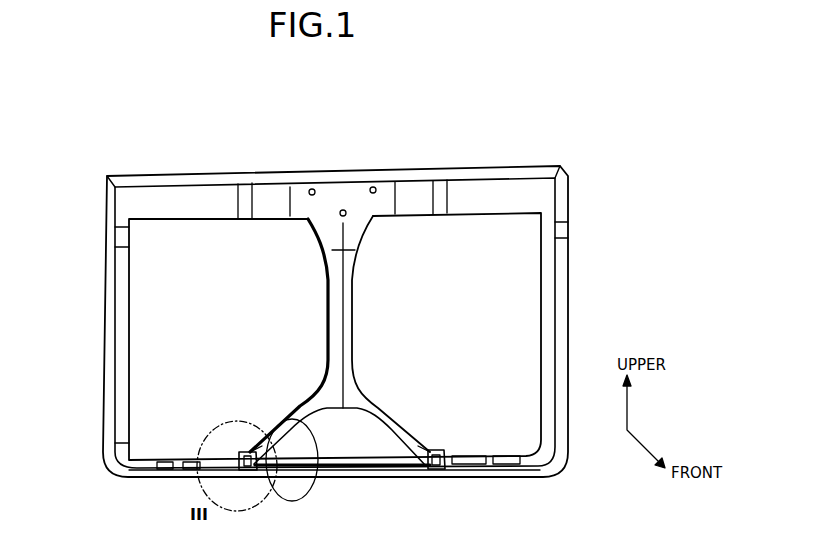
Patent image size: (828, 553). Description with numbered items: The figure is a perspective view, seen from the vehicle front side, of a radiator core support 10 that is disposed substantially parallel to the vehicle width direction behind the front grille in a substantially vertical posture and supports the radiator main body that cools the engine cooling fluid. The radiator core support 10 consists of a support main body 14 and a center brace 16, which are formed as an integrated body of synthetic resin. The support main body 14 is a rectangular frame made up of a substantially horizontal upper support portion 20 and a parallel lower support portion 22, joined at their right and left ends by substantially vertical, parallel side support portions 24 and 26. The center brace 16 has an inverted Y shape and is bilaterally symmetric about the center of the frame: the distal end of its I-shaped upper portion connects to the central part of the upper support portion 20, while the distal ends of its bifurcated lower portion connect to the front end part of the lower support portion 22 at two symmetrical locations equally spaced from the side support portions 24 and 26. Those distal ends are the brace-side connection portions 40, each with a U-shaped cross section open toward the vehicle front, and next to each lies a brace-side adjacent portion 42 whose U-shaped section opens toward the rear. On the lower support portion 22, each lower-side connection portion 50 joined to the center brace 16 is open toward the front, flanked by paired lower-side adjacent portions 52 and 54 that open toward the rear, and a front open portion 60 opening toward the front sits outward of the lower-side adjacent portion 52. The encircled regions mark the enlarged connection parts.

The radiator core support 10 is at (522, 118).
The support main body 14 is at (121, 157).
The center brace 16 is at (374, 299).
The upper support portion 20 is at (317, 173).
The lower support portion 22 is at (357, 460).
The side support portion 24 is at (568, 266).
The side support portion 26 is at (114, 322).
The brace-side connection portion 40 is at (244, 465).
The brace-side adjacent portion 42 is at (263, 458).
The lower-side connection portion 50 is at (245, 466).
The lower-side adjacent portion 52 is at (226, 452).
The lower-side adjacent portion 54 is at (262, 508).
The front open portion 60 is at (168, 478).